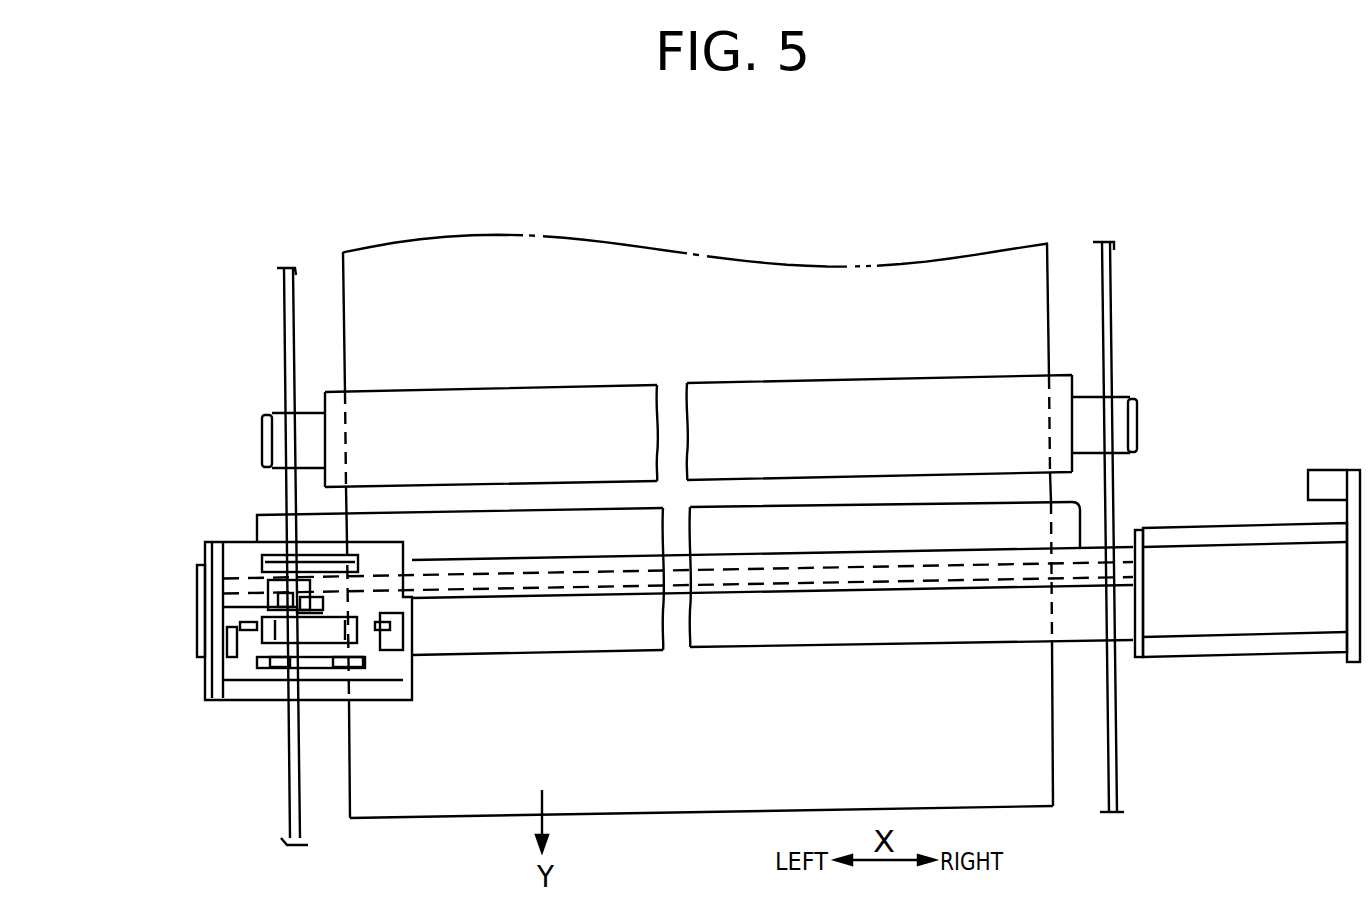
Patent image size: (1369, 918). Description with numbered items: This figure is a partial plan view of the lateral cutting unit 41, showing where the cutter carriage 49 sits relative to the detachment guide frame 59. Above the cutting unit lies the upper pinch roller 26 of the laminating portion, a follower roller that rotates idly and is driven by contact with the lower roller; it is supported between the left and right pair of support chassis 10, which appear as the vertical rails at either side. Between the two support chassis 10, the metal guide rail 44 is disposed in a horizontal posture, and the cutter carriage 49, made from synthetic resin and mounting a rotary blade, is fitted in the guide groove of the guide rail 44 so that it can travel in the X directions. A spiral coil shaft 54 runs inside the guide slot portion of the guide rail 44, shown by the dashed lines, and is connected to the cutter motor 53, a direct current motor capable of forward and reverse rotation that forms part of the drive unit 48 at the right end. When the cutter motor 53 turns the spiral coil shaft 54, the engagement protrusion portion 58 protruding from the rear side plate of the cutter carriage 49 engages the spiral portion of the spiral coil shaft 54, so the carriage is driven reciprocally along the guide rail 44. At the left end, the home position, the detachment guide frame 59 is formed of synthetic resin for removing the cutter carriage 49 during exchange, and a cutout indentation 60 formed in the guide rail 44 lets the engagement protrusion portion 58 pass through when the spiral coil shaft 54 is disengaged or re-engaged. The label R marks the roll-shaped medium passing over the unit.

The support chassis 10 is at (291, 302).
The upper pinch roller 26 is at (913, 420).
The lateral cutting unit 41 is at (160, 367).
The guide rail 44 is at (830, 648).
The drive unit 48 is at (1212, 518).
The cutter carriage 49 is at (268, 663).
The cutter motor 53 is at (1240, 617).
The spiral coil shaft 54 is at (940, 592).
The engagement protrusion portion 58 is at (227, 608).
The detachment guide frame 59 is at (418, 683).
The cutout indentation 60 is at (270, 592).
The recording medium roll R is at (647, 253).